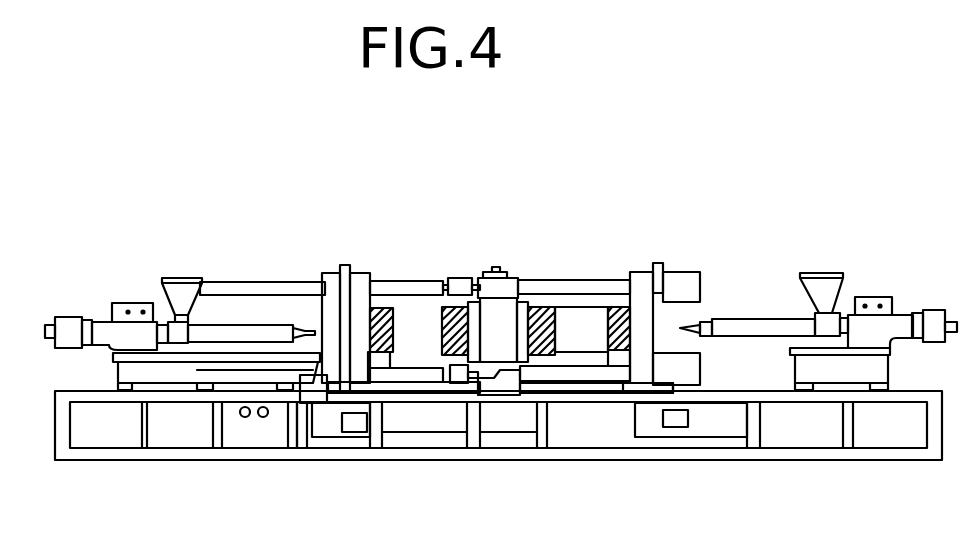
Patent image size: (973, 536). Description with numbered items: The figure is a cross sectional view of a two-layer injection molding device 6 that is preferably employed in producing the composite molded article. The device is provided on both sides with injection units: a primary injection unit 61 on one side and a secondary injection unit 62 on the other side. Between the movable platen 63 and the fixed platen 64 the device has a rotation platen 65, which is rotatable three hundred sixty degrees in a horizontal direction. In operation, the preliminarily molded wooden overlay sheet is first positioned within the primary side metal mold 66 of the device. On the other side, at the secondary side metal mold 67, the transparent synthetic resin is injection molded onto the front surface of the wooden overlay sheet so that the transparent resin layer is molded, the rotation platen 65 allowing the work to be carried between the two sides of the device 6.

The two-layer injection molding device 6 is at (191, 240).
The primary injection unit 61 is at (268, 282).
The secondary injection unit 62 is at (750, 322).
The movable platen 63 is at (360, 282).
The fixed platen 64 is at (643, 272).
The rotation platen 65 is at (508, 320).
The primary side metal mold 66 is at (382, 355).
The secondary side metal mold 67 is at (620, 353).